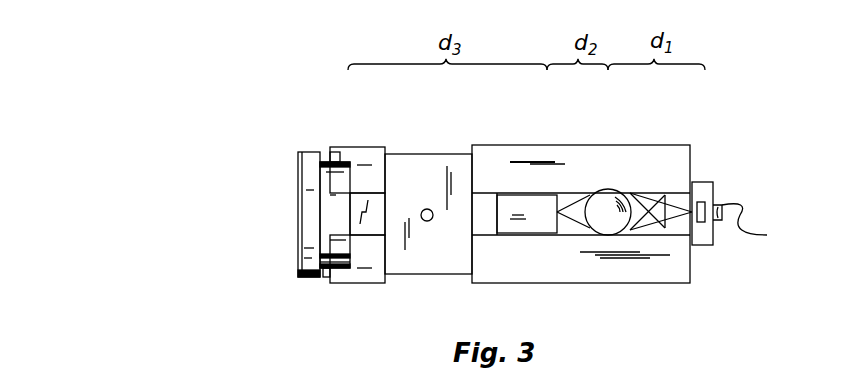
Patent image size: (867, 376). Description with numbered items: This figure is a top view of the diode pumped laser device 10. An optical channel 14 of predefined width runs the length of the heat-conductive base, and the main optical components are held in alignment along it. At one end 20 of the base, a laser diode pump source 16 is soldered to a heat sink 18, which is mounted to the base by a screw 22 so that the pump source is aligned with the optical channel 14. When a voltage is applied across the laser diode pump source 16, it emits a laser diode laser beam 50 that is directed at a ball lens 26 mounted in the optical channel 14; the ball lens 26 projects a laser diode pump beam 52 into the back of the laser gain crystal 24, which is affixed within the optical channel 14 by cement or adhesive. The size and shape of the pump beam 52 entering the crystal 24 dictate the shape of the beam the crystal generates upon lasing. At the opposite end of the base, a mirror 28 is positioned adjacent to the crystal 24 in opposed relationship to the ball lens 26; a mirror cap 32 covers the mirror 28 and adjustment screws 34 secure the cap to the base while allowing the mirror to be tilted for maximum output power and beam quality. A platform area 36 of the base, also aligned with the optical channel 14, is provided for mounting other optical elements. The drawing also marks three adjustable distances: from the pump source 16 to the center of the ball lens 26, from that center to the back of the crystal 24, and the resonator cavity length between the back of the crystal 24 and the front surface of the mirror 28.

The diode pumped laser device 10 is at (257, 145).
The optical channel 14 is at (487, 209).
The laser diode pump source 16 is at (702, 208).
The heat sink 18 is at (703, 182).
The end of the base 20 is at (692, 265).
The screw 22 is at (755, 226).
The laser gain medium or crystal 24 is at (528, 212).
The ball lens 26 is at (604, 193).
The mirror 28 is at (337, 147).
The mirror cap 32 is at (308, 230).
The adjustment screws 34 is at (327, 160).
The platform area 36 is at (435, 242).
The laser diode laser beam 50 is at (647, 215).
The laser diode pump beam 52 is at (573, 215).